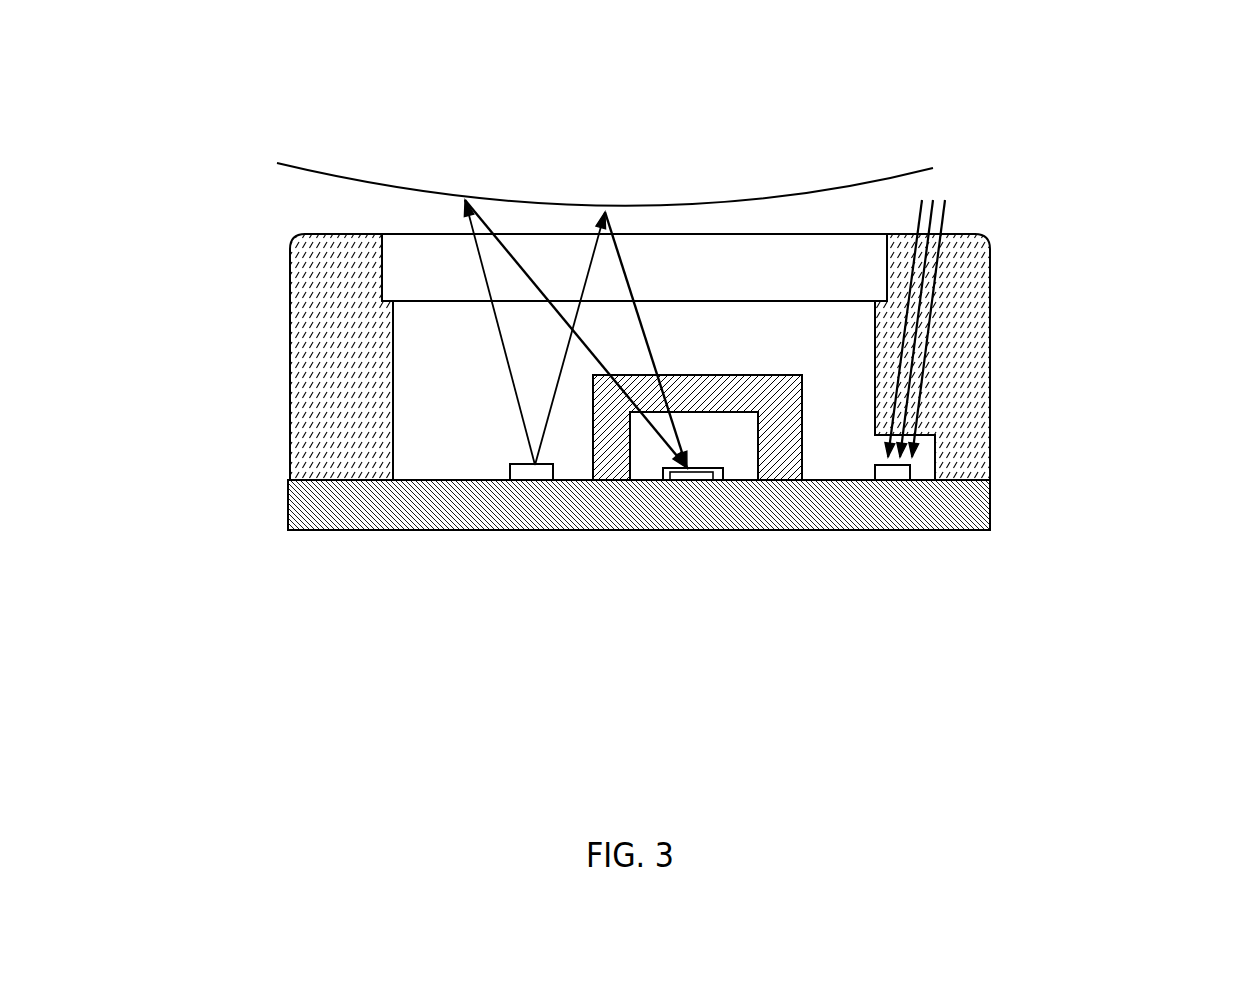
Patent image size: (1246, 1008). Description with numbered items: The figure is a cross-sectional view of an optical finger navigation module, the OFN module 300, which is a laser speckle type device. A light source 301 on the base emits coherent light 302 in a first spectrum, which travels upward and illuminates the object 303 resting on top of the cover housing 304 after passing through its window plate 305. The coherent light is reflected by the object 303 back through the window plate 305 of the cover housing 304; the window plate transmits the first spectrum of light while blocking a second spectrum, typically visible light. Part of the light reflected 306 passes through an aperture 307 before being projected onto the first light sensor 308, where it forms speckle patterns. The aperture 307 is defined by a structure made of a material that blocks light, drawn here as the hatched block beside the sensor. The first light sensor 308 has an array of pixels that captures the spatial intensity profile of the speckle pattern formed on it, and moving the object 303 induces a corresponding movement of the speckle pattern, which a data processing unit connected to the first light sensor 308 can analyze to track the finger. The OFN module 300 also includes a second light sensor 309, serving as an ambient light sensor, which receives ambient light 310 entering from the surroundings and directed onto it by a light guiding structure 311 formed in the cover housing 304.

The OFN module 300 is at (670, 386).
The light source 301 is at (580, 546).
The coherent light 302 is at (469, 444).
The object 303 is at (570, 127).
The cover housing 304 is at (265, 357).
The window plate 305 is at (512, 233).
The light reflected 306 is at (675, 269).
The aperture 307 is at (752, 540).
The first light sensor 308 is at (612, 596).
The second light sensor 309 is at (952, 583).
The ambient light 310 is at (1044, 310).
The light guiding structure 311 is at (1028, 357).